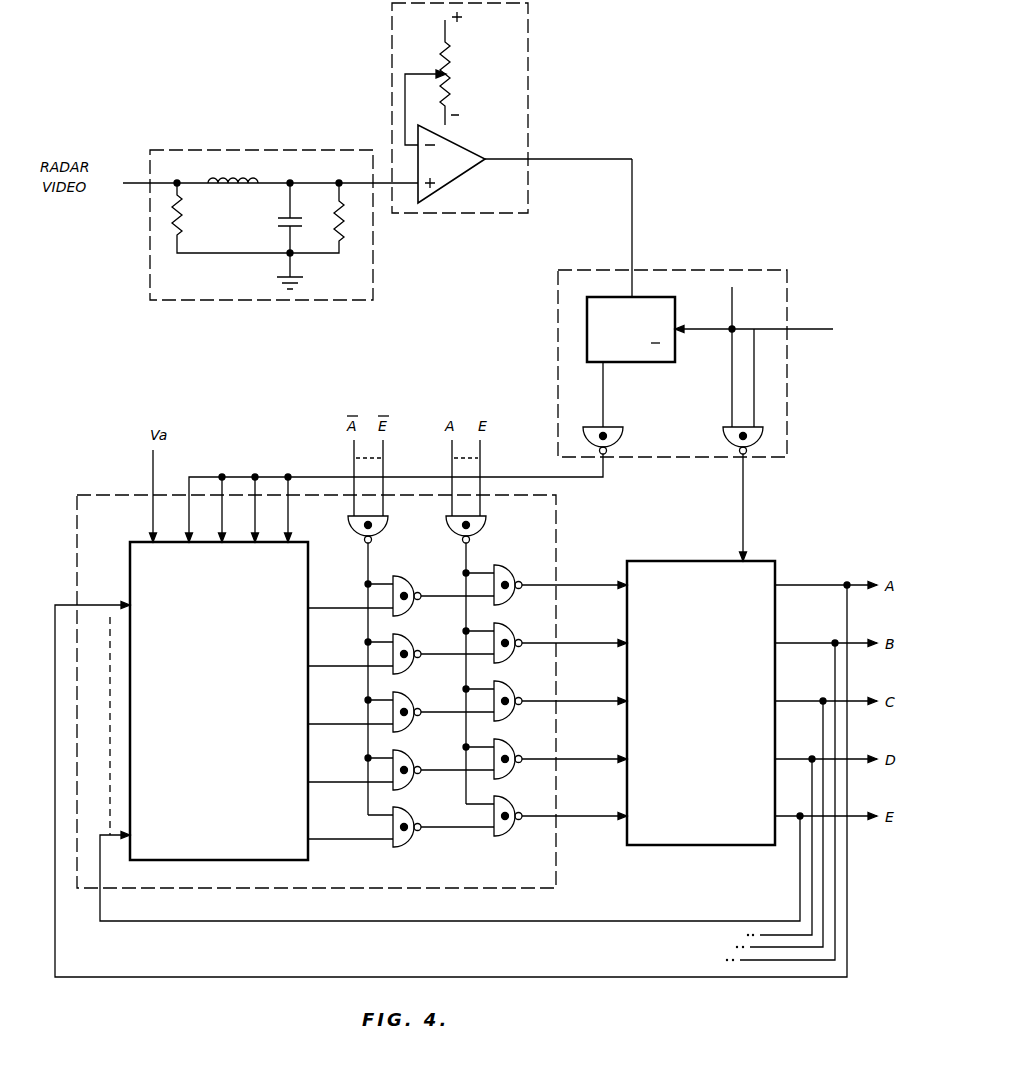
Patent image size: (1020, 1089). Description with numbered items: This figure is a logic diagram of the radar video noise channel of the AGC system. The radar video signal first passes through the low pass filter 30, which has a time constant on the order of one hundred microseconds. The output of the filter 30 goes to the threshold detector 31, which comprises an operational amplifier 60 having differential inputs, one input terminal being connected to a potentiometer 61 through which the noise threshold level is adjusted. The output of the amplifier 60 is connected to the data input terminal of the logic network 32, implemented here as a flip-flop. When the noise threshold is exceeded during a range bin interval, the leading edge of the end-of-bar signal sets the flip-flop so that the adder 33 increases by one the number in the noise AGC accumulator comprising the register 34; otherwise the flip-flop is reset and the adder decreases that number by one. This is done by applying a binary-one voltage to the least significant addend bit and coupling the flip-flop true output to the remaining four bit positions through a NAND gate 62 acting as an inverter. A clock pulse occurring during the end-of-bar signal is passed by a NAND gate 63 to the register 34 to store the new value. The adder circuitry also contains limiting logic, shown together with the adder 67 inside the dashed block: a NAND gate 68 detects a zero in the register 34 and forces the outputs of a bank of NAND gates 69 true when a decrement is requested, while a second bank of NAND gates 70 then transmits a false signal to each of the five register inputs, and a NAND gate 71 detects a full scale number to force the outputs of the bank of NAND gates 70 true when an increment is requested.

The low pass filter 30 is at (225, 160).
The threshold detector 31 is at (512, 126).
The logic network 32 is at (692, 308).
The adder 33 is at (238, 880).
The five-bit register 34 is at (670, 846).
The operational amplifier 60 is at (452, 142).
The potentiometer 61 is at (455, 68).
The NAND gate 62 is at (623, 436).
The NAND gate 63 is at (762, 437).
The adder 67 is at (164, 853).
The NAND gate 68 is at (389, 526).
The bank of NAND gates 69 is at (380, 851).
The second bank of NAND gates 70 is at (477, 849).
The NAND gate 71 is at (487, 526).